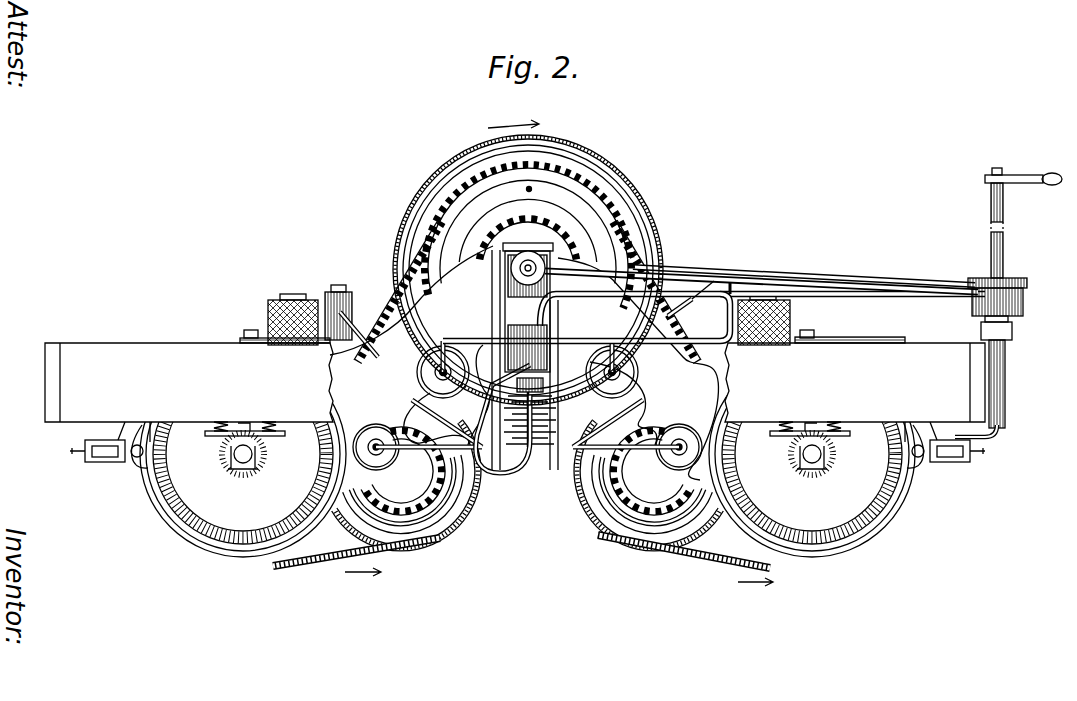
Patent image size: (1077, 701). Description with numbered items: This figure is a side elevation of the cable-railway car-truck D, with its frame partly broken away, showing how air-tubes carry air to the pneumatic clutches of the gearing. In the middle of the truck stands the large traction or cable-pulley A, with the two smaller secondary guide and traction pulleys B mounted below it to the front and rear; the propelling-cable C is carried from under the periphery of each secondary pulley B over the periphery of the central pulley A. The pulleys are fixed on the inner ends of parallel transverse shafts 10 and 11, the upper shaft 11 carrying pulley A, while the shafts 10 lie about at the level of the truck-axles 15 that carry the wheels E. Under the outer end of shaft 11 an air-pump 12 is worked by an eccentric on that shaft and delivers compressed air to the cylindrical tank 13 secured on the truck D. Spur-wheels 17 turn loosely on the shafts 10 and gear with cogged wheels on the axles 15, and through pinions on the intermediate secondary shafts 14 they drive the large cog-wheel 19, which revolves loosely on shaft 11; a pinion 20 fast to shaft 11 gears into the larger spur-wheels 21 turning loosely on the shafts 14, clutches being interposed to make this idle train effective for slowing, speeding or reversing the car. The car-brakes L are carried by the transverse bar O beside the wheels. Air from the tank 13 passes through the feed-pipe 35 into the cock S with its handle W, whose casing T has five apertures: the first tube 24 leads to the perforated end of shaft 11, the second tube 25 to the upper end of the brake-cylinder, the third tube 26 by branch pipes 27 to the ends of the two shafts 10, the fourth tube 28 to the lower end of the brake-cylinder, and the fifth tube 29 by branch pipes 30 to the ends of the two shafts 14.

The main cable-pulley A is at (426, 198).
The large cog-wheel 19 is at (527, 237).
The pinion 20 is at (527, 239).
The upper main shaft 11 is at (543, 276).
The air-pump 12 is at (507, 299).
The first connecting-tube 24 is at (598, 273).
The second connecting-tube 25 is at (672, 268).
The third connecting-tube 26 is at (597, 298).
The fifth connecting-tube 29 is at (640, 340).
The spur-wheels 21 is at (524, 350).
The fourth connecting-tube 28 is at (688, 310).
The branch pipes 30 is at (438, 354).
The intermediate secondary shafts 14 is at (432, 374).
The cylindrical tank 13 is at (540, 436).
The branch pipes 27 is at (470, 440).
The shafts 10 is at (374, 455).
The spur-wheels 17 is at (527, 476).
The truck-axles 15 is at (232, 453).
The car-truck D is at (800, 323).
The wheel E is at (527, 454).
The secondary guide and traction pulleys B is at (458, 508).
The propelling-cable C is at (340, 556).
The transverse bar O is at (105, 462).
The car-brakes L is at (140, 468).
The hand wheel W is at (1016, 185).
The cock S is at (990, 256).
The casing T is at (1023, 300).
The feed-pipe 35 is at (1006, 346).